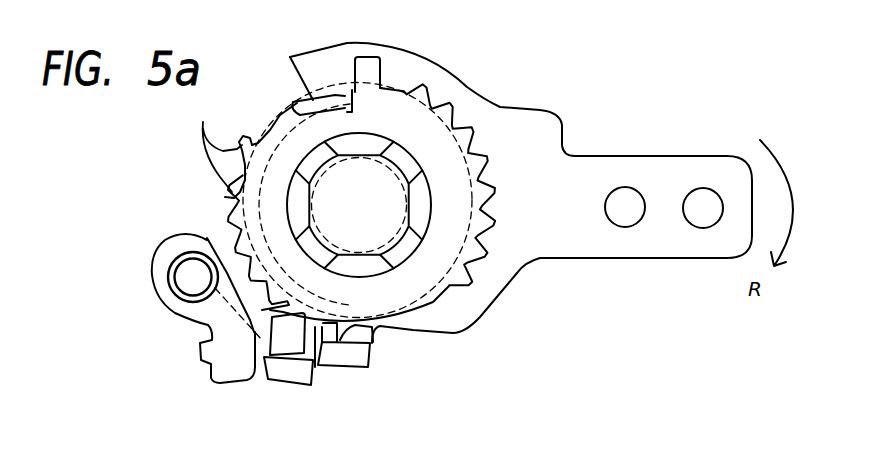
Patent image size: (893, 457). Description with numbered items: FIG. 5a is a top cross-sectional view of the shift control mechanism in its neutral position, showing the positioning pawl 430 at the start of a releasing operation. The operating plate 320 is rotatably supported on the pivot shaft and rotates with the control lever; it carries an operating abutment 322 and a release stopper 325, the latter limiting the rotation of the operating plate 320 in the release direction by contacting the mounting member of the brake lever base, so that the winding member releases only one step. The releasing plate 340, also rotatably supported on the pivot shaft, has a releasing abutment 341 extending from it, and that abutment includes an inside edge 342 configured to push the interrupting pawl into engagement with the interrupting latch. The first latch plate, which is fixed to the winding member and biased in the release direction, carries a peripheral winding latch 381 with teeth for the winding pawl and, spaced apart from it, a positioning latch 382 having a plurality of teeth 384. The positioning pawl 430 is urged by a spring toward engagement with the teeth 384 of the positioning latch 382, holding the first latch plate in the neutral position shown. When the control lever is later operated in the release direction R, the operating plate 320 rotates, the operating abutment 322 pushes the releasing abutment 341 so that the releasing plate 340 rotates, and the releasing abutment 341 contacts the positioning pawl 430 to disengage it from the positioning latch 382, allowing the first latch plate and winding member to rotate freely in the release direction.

The operating plate 320 is at (520, 262).
The operating abutment 322 is at (357, 360).
The release stopper 325 is at (207, 238).
The releasing plate 340 is at (347, 112).
The releasing abutment 341 is at (312, 374).
The inside edge 342 is at (266, 358).
The winding latch 381 is at (486, 189).
The positioning latch 382 is at (236, 198).
The teeth 384 is at (203, 123).
The positioning pawl 430 is at (220, 378).